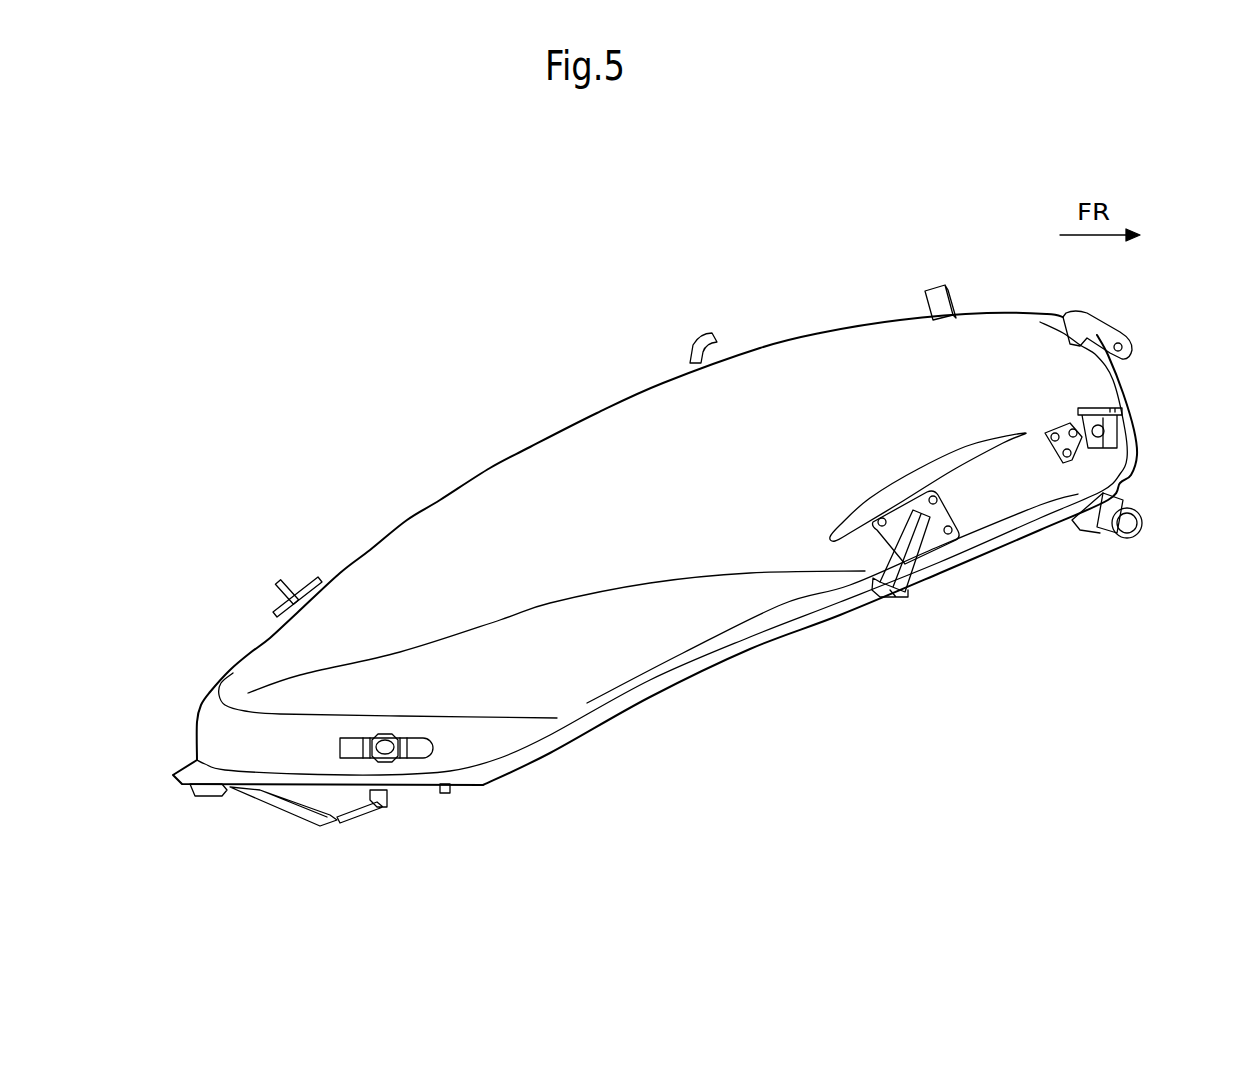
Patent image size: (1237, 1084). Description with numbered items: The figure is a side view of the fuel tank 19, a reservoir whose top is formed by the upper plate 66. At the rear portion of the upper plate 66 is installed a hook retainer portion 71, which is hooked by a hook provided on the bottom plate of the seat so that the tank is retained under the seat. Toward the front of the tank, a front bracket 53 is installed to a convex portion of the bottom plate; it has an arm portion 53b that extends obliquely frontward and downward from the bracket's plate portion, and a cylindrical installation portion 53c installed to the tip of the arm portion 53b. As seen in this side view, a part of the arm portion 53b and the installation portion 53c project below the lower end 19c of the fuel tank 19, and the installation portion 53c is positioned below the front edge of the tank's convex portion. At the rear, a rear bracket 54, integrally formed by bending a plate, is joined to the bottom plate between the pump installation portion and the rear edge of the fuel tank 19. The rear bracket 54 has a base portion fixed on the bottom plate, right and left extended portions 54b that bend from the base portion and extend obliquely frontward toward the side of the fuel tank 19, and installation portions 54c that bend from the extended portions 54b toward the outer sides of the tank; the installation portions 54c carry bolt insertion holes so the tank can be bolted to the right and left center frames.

The fuel tank 19 is at (443, 387).
The lower end 19c is at (978, 565).
The upper plate 66 is at (592, 452).
The hook retainer portion 71 is at (277, 580).
The front bracket 53 is at (1135, 534).
The arm portion 53b is at (1090, 510).
The cylindrical installation portion 53c is at (1143, 527).
The rear bracket 54 is at (320, 855).
The extended portion 54b is at (318, 807).
The installation portion 54c is at (357, 810).